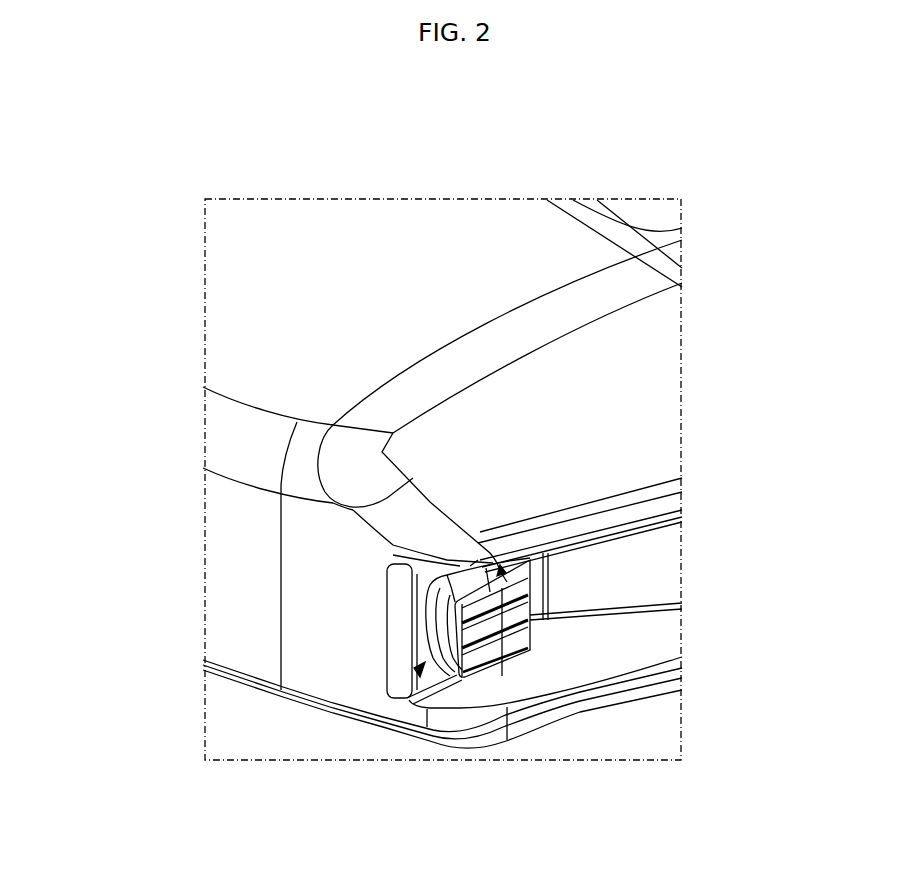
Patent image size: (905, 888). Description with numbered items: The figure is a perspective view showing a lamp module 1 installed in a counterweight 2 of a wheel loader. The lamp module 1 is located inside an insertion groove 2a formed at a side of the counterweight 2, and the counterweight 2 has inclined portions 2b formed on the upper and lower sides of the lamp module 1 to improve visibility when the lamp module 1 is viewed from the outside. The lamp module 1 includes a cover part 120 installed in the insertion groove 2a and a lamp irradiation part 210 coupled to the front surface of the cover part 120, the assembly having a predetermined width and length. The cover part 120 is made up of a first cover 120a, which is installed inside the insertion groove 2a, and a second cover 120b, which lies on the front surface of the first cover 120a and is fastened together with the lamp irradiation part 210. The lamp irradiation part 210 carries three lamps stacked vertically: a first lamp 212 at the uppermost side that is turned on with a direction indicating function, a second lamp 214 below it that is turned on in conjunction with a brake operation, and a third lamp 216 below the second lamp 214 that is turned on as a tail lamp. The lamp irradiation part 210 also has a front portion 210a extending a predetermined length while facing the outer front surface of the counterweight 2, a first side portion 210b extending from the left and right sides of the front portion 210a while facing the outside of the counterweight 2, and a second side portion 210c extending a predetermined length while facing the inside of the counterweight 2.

The lamp module 1 is at (420, 670).
The counterweight 2 is at (297, 280).
The insertion groove 2a is at (627, 557).
The inclined portion 2b is at (553, 442).
The cover part 120 is at (288, 631).
The first cover 120a is at (430, 602).
The second cover 120b is at (430, 640).
The lamp irradiation part 210 is at (602, 426).
The front portion 210a is at (490, 568).
The first side portion 210b is at (473, 562).
The second side portion 210c is at (505, 568).
The first lamp 212 is at (530, 588).
The second lamp 214 is at (548, 590).
The third lamp 216 is at (530, 645).